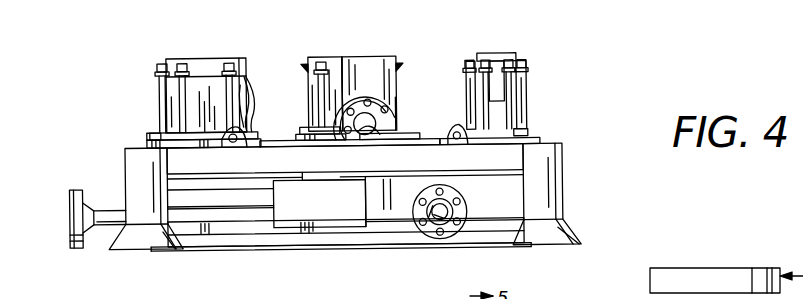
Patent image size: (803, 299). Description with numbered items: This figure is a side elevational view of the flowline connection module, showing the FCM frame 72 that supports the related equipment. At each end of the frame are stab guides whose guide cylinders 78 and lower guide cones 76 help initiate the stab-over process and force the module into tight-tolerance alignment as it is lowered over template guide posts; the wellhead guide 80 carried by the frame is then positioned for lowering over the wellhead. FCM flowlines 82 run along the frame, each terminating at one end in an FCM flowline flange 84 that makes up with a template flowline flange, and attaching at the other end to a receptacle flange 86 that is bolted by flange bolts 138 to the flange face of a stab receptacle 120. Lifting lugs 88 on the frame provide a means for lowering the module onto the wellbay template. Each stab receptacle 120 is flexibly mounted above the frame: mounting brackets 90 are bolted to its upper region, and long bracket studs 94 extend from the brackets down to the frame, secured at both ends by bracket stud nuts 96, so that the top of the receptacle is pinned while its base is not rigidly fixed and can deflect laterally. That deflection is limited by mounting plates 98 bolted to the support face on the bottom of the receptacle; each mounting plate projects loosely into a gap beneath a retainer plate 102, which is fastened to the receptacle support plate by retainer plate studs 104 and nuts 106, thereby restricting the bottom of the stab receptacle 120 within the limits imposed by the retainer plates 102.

The FCM frame 72 is at (287, 163).
The guide cone 76 is at (146, 240).
The guide cylinder 78 is at (156, 197).
The wellhead guide 80 is at (360, 206).
The FCM flowline 82 is at (110, 200).
The FCM flowline flange 84 is at (70, 187).
The receptacle flange 86 is at (248, 80).
The lifting lug 88 is at (246, 133).
The mounting bracket 90 is at (187, 64).
The bracket stud 94 is at (163, 95).
The bracket stud nut 96 is at (158, 78).
The mounting plate 98 is at (318, 150).
The retainer plate 102 is at (245, 127).
The retainer plate stud 104 is at (150, 132).
The nut 106 is at (147, 142).
The stab receptacle 120 is at (375, 66).
The flange bolt 138 is at (392, 93).